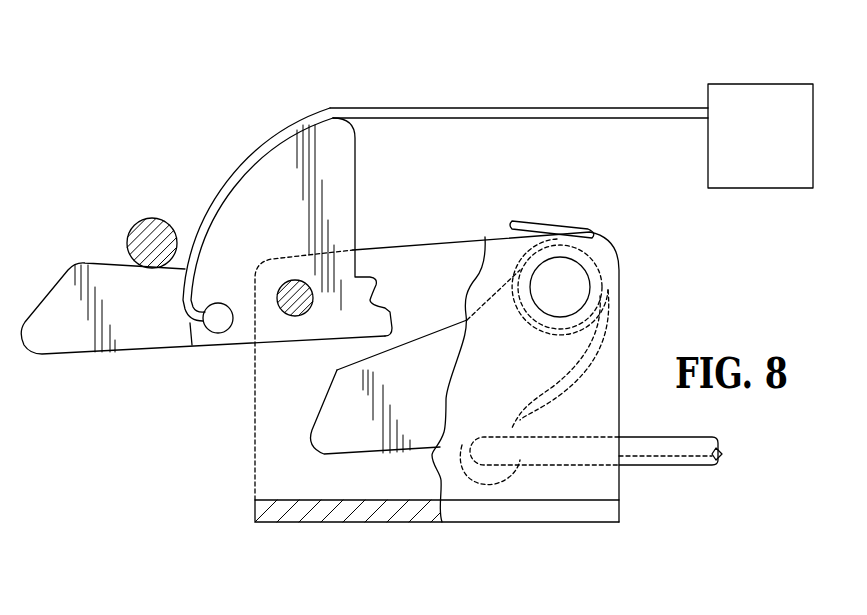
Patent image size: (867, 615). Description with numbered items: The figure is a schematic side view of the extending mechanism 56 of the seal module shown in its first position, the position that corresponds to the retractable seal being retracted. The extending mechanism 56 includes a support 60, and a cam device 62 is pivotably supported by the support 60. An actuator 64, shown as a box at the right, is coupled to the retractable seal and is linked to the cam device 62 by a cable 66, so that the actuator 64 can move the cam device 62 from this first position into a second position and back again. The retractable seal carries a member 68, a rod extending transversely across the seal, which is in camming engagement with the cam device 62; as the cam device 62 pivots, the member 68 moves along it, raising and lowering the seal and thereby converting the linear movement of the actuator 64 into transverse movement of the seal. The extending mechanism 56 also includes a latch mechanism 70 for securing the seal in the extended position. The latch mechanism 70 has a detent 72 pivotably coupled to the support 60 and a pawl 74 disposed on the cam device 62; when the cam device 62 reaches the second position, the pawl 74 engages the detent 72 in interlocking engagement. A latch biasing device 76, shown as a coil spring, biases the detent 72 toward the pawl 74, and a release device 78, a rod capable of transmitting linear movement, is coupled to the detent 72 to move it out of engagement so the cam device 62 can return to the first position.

The extending mechanism 56 is at (472, 74).
The support 60 is at (533, 522).
The cam device 62 is at (42, 356).
The actuator 64 is at (760, 136).
The cable 66 is at (528, 108).
The member 68 is at (152, 232).
The latch mechanism 70 is at (315, 375).
The detent 72 is at (388, 308).
The pawl 74 is at (322, 455).
The latch biasing device 76 is at (592, 232).
The release device 78 is at (672, 466).